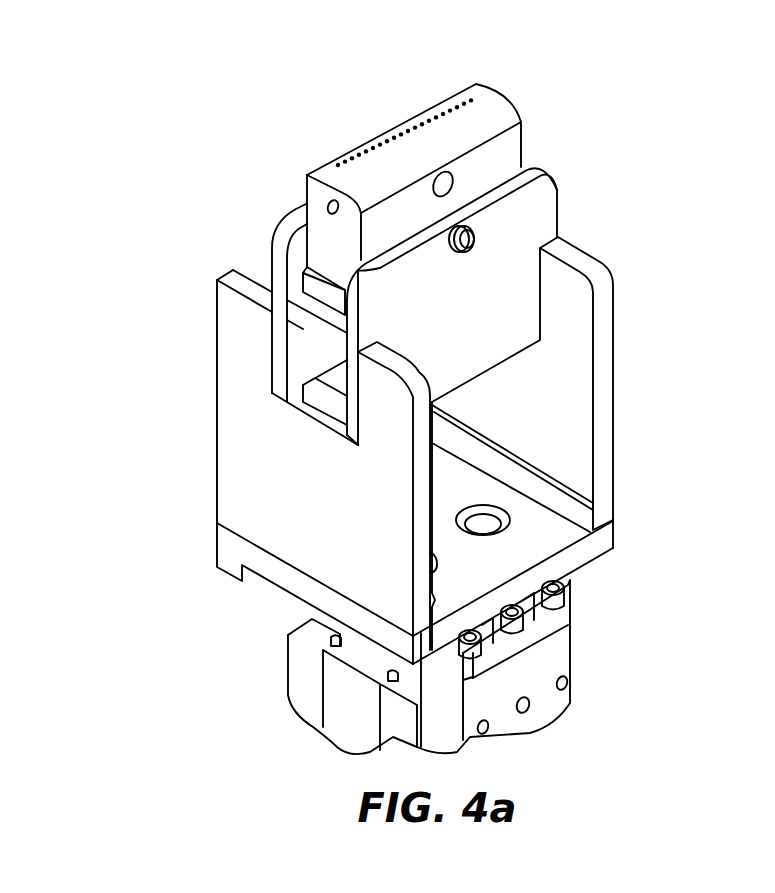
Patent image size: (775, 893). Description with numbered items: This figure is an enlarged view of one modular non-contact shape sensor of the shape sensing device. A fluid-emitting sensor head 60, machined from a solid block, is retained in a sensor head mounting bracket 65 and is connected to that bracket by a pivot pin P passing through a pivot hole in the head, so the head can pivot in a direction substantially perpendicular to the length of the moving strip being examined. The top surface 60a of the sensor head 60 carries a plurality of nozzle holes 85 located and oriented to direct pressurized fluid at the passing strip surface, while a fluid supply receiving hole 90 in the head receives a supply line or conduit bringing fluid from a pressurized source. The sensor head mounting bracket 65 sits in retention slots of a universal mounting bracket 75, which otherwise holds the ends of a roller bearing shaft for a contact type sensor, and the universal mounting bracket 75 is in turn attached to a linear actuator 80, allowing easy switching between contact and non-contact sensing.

The fluid-emitting sensor head 60 is at (385, 166).
The top surface 60a is at (363, 150).
The sensor head mounting bracket 65 is at (543, 188).
The universal mounting bracket 75 is at (262, 512).
The linear actuator 80 is at (547, 700).
The nozzle holes 85 is at (432, 127).
The fluid supply receiving hole 90 is at (455, 177).
The pivot pin P is at (475, 237).